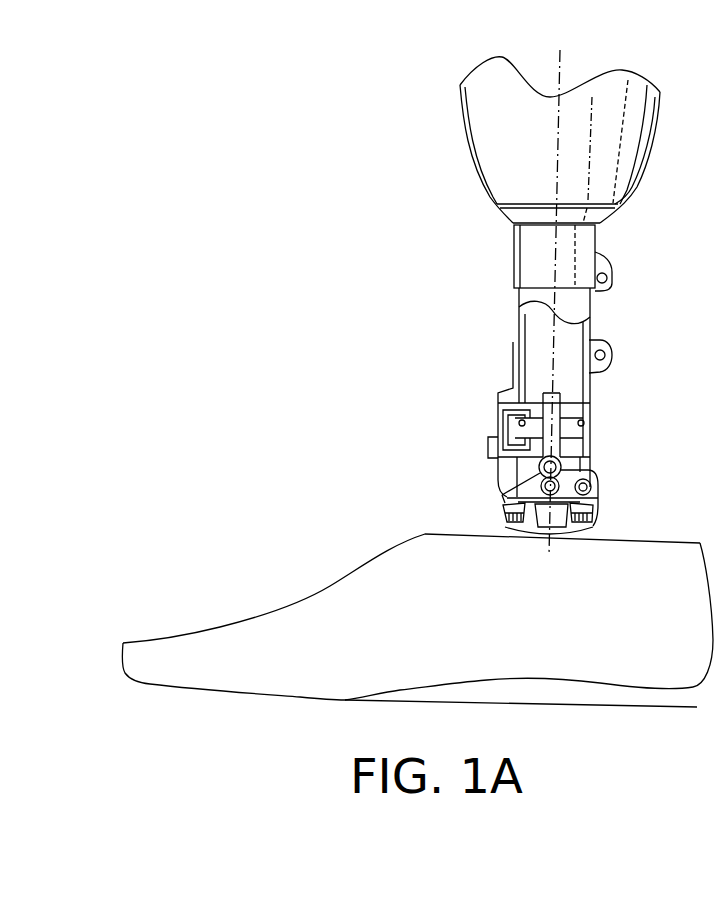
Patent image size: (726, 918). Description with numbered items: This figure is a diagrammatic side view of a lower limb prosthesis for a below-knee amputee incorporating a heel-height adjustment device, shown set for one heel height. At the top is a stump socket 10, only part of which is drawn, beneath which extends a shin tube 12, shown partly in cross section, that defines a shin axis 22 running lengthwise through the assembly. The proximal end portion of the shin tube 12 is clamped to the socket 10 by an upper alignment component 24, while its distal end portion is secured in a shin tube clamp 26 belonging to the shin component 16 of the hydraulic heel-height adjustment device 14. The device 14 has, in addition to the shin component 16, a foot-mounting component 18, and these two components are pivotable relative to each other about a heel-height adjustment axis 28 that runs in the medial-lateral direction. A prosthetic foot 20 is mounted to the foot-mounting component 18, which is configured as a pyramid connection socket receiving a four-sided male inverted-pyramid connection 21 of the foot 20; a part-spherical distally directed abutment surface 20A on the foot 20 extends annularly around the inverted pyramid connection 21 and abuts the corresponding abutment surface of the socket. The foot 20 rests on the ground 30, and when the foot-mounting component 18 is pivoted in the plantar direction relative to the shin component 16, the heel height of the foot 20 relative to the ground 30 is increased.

The stump socket 10 is at (643, 133).
The shin tube 12 is at (583, 306).
The hydraulic heel-height adjustment device 14 is at (433, 445).
The shin component 16 is at (593, 406).
The foot-mounting component 18 is at (603, 488).
The prosthetic foot 20 is at (303, 618).
The part-spherical distally directed abutment surface 20A is at (507, 530).
The four-sided male inverted-pyramid connection 21 is at (557, 520).
The shin axis 22 is at (565, 59).
The upper alignment component 24 is at (606, 221).
The shin tube clamp 26 is at (613, 352).
The heel-height adjustment axis 28 is at (597, 482).
The ground 30 is at (592, 708).